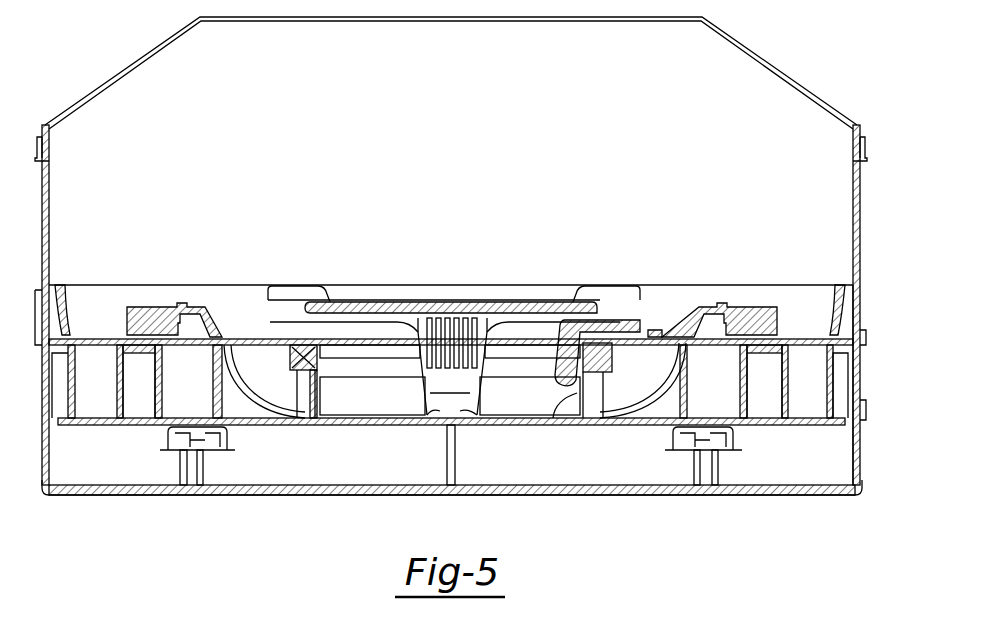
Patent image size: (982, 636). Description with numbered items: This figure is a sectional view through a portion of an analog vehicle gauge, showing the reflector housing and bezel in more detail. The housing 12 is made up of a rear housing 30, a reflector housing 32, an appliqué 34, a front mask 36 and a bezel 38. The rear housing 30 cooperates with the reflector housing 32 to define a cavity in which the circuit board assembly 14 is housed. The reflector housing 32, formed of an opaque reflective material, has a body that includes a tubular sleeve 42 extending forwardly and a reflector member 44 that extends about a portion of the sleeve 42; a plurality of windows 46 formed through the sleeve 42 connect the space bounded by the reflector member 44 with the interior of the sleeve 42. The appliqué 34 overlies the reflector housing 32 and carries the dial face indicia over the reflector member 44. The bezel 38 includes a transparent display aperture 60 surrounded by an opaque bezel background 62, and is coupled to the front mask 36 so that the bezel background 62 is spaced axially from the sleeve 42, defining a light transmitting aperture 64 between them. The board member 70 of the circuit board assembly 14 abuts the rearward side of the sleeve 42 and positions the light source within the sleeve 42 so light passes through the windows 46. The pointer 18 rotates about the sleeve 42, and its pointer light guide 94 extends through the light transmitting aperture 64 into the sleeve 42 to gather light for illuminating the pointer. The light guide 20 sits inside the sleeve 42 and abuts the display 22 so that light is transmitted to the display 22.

The housing 12 is at (876, 355).
The circuit board assembly 14 is at (272, 426).
The pointer 18 is at (648, 330).
The light guide 20 is at (485, 330).
The display 22 is at (455, 298).
The rear housing 30 is at (860, 468).
The reflector housing 32 is at (855, 382).
The appliqué 34 is at (95, 333).
The front mask 36 is at (860, 202).
The bezel 38 is at (598, 286).
The sleeve 42 is at (574, 395).
The reflector member 44 is at (230, 367).
The windows 46 is at (366, 407).
The transparent display aperture 60 is at (372, 298).
The bezel background 62 is at (300, 284).
The light transmitting aperture 64 is at (255, 320).
The board member 70 is at (780, 426).
The pointer light guide 94 is at (565, 350).